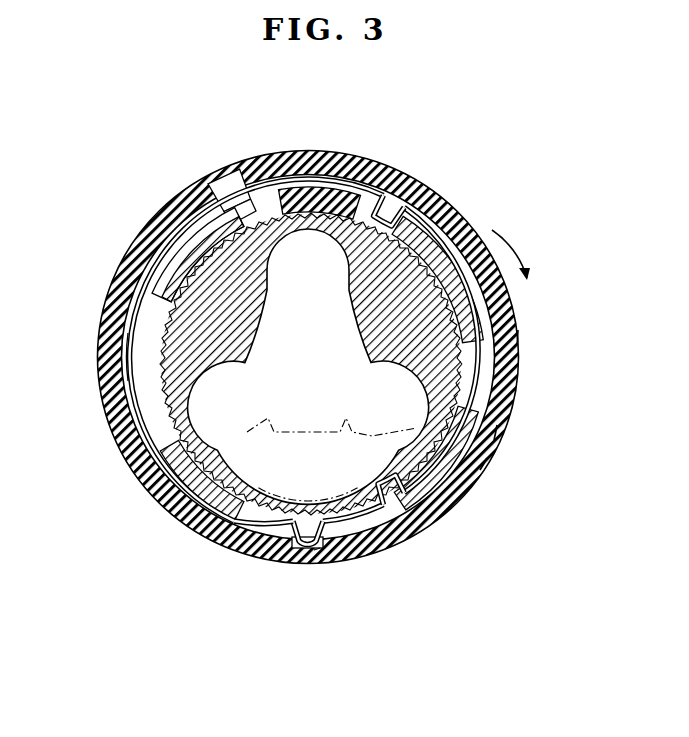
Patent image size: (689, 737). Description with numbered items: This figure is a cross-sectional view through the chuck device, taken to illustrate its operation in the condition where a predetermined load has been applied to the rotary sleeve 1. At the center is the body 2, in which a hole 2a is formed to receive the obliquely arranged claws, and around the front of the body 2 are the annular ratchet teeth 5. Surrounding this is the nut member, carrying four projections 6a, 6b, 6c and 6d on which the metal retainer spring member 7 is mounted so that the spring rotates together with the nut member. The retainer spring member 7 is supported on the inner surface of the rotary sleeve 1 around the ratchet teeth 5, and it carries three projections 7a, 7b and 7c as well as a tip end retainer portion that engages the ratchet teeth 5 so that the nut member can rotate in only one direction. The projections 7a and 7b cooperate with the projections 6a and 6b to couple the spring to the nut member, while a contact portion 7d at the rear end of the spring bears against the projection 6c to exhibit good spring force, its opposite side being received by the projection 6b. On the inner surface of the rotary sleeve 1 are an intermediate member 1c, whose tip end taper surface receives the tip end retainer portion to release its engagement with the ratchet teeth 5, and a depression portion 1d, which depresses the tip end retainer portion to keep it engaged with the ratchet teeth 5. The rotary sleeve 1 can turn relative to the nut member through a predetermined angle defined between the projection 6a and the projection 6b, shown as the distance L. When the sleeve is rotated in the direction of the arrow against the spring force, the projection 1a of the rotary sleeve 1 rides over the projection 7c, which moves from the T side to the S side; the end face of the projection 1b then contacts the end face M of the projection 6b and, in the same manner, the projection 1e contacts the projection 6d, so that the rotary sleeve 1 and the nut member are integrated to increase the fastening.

The rotary sleeve 1 is at (520, 374).
The projection of the rotary sleeve 1a is at (332, 545).
The projection of the rotary sleeve 1b is at (519, 322).
The intermediate member 1c is at (313, 190).
The depression portion 1d is at (245, 196).
The projection of the rotary sleeve 1e is at (150, 361).
The body 2 is at (165, 298).
The hole 2a is at (273, 282).
The ratchet teeth 5 is at (228, 212).
The projection of the nut member 6a is at (463, 233).
The projection of the nut member 6b is at (457, 502).
The projection of the nut member 6c is at (162, 498).
The projection of the nut member 6d is at (185, 245).
The retainer spring member 7 is at (270, 185).
The projection of the retainer spring member 7a is at (393, 204).
The projection of the retainer spring member 7b is at (410, 532).
The projection of the retainer spring member 7c is at (276, 543).
The contact portion 7d is at (200, 520).
The distance L is at (497, 425).
The end face M is at (487, 458).
The S side S is at (366, 555).
The T side T is at (314, 550).